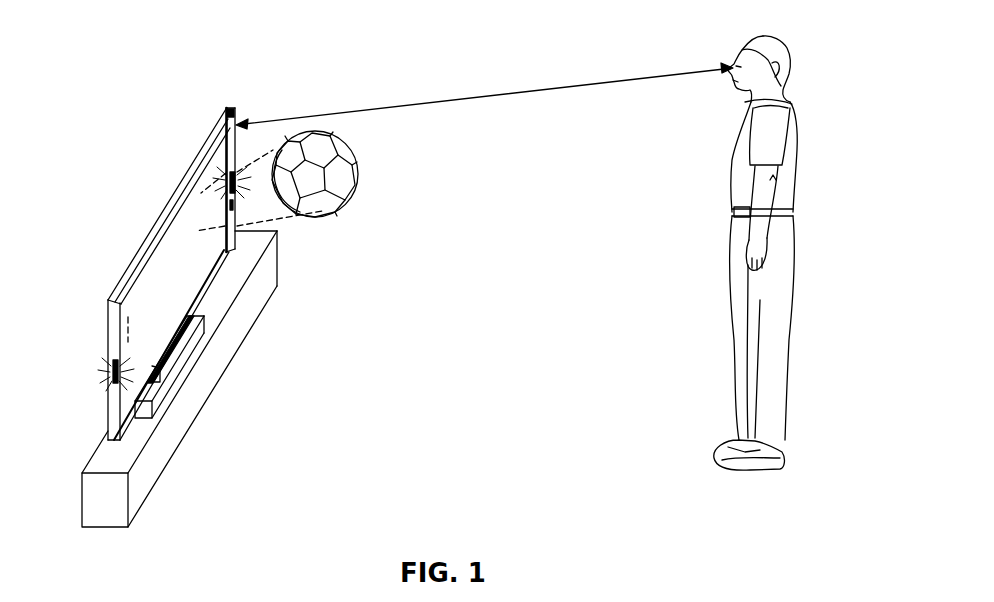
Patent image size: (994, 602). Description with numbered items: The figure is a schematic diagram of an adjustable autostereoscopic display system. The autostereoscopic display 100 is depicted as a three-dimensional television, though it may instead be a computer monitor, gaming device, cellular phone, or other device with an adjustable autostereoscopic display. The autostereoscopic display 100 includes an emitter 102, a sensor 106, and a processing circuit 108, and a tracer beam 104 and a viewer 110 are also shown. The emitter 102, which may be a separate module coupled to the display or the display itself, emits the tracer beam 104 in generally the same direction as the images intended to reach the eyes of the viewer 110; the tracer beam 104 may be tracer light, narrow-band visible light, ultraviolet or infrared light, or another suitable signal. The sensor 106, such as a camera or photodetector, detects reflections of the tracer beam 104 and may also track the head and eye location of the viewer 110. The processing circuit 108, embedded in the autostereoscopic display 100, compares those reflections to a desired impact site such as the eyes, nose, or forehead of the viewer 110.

The autostereoscopic display 100 is at (167, 206).
The emitter 102 is at (230, 113).
The tracer beam 104 is at (564, 88).
The sensor 106 is at (233, 196).
The processing circuit 108 is at (127, 323).
The viewer 110 is at (776, 36).